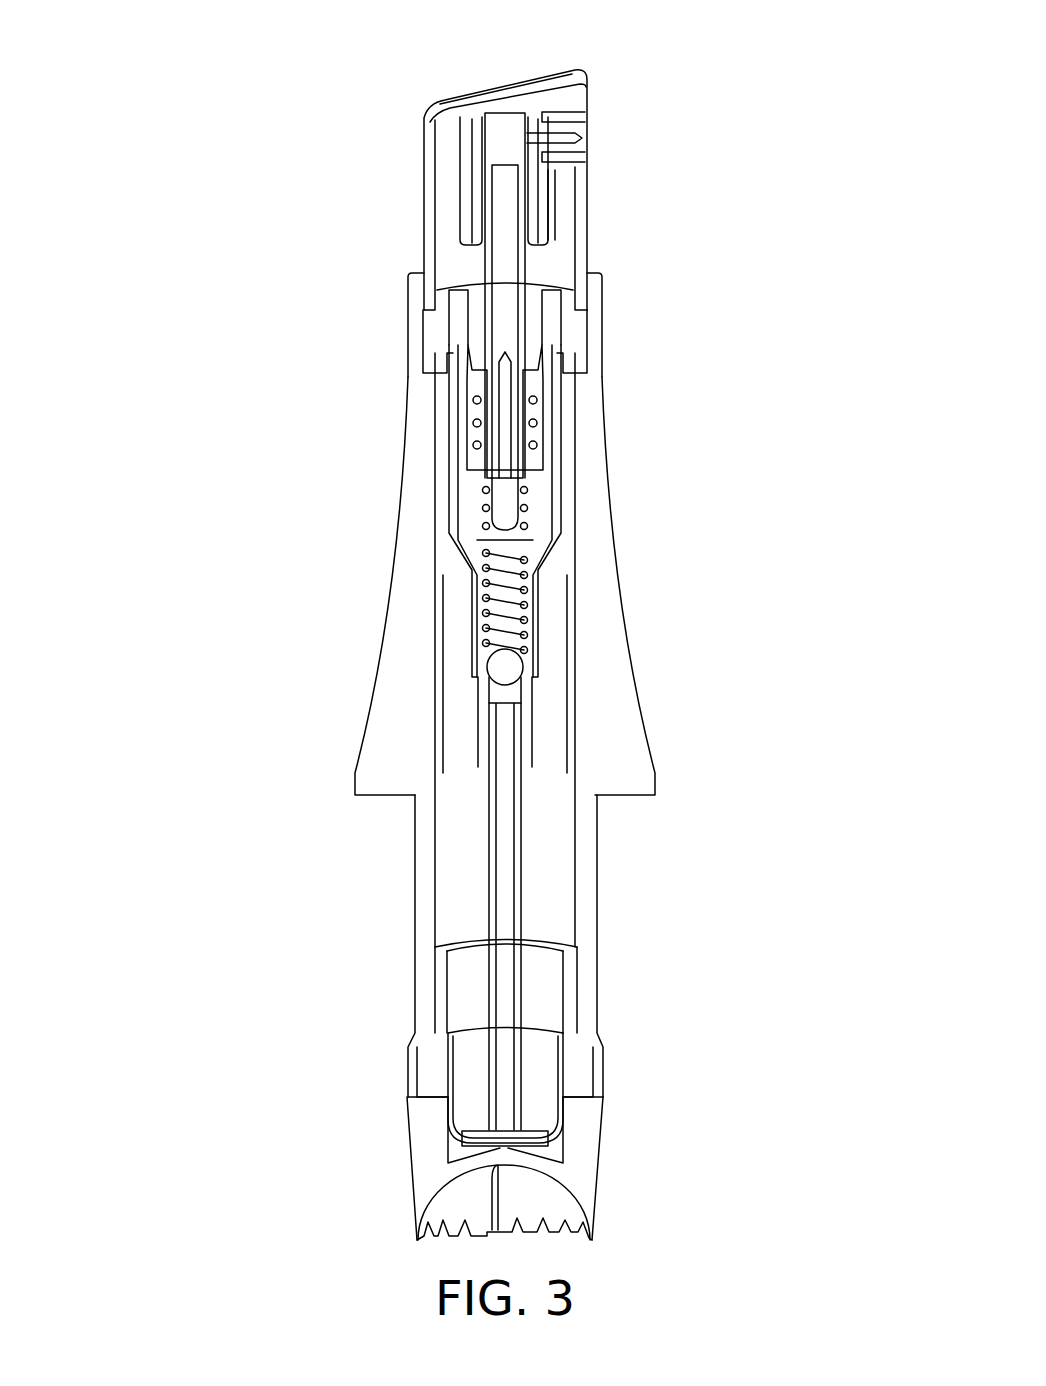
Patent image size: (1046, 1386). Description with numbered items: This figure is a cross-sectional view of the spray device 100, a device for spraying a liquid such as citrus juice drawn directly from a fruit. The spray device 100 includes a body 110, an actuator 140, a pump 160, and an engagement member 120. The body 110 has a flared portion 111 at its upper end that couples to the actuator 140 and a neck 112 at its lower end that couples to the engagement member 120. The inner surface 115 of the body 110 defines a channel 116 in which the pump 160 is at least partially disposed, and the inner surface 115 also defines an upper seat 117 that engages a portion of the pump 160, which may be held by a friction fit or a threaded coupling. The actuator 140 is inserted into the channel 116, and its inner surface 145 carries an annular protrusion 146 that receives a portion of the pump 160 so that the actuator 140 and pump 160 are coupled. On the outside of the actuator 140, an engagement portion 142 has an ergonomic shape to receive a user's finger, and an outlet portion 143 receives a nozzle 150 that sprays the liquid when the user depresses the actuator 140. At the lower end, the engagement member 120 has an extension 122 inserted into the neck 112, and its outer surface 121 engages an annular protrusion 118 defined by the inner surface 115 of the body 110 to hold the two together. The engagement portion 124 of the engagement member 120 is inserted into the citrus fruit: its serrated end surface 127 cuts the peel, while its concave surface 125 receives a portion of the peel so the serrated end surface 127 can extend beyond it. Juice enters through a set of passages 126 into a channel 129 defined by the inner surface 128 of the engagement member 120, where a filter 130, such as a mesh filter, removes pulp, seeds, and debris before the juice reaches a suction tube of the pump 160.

The spray device 100 is at (216, 154).
The body 110 is at (407, 355).
The flared portion 111 is at (372, 688).
The neck 112 is at (410, 912).
The inner surface 115 is at (563, 640).
The channel 116 is at (565, 493).
The upper seat 117 is at (570, 366).
The annular protrusion 118 is at (580, 958).
The engagement member 120 is at (410, 1080).
The outer surface 121 is at (405, 1115).
The extension 122 is at (442, 1020).
The engagement portion 124 is at (590, 1058).
The concave surface 125 is at (553, 1195).
The passages 126 is at (470, 1203).
The serrated end surface 127 is at (563, 1237).
The inner surface 128 is at (540, 1003).
The channel 129 is at (457, 983).
The filter 130 is at (540, 1128).
The actuator 140 is at (424, 222).
The engagement portion 142 is at (470, 88).
The outlet portion 143 is at (574, 105).
The inner surface 145 is at (568, 232).
The annular protrusion 146 is at (550, 188).
The nozzle 150 is at (587, 152).
The pump 160 is at (446, 519).